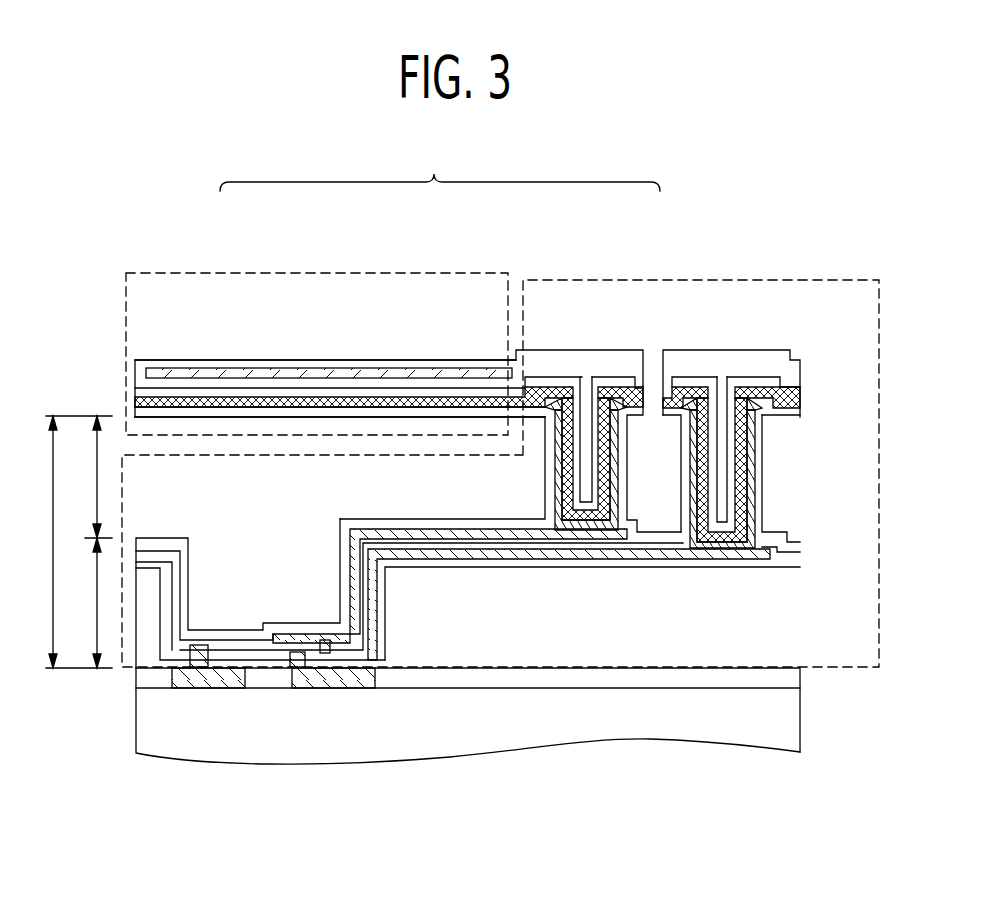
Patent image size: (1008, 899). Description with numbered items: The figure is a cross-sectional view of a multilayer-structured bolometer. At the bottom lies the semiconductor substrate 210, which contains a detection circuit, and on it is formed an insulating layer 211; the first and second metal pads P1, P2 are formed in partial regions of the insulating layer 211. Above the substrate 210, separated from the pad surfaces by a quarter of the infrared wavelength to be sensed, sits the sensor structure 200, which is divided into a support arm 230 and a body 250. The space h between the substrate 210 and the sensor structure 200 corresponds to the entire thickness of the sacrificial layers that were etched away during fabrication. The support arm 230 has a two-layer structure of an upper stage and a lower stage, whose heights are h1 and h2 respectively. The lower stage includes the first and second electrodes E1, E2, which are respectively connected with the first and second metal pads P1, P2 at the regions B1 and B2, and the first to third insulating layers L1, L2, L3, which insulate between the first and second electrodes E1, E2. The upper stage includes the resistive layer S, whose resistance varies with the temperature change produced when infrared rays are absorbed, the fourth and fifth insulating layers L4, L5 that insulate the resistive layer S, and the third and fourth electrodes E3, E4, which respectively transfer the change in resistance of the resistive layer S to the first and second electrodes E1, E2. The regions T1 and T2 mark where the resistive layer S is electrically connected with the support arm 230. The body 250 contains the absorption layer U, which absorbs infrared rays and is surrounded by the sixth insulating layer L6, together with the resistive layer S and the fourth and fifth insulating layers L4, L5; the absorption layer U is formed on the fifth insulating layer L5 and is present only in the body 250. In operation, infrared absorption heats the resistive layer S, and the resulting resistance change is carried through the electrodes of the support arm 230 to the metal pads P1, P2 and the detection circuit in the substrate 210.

The sensor structure 200 is at (440, 162).
The body 250 is at (354, 311).
The support arm 230 is at (633, 280).
The semiconductor substrate 210 is at (792, 720).
The insulating layer 211 is at (580, 690).
The first metal pad P1 is at (335, 690).
The second metal pad P2 is at (213, 690).
The first connection region B1 is at (326, 655).
The second connection region B2 is at (203, 650).
The first electrode E1 is at (772, 572).
The second electrode E2 is at (445, 534).
The third electrode E3 is at (510, 460).
The fourth electrode E4 is at (731, 460).
The first insulating layer L1 is at (790, 566).
The second insulating layer L2 is at (792, 542).
The third insulating layer L3 is at (500, 556).
The fourth insulating layer L4 is at (209, 412).
The fifth insulating layer L5 is at (372, 396).
The sixth insulating layer L6 is at (486, 360).
The resistive layer S is at (285, 397).
The absorption layer U is at (426, 386).
The first resistive-layer connection region T1 is at (727, 524).
The second resistive-layer connection region T2 is at (592, 522).
The space h is at (70, 542).
The height of upper stage h1 is at (84, 603).
The height of lower stage h2 is at (90, 477).